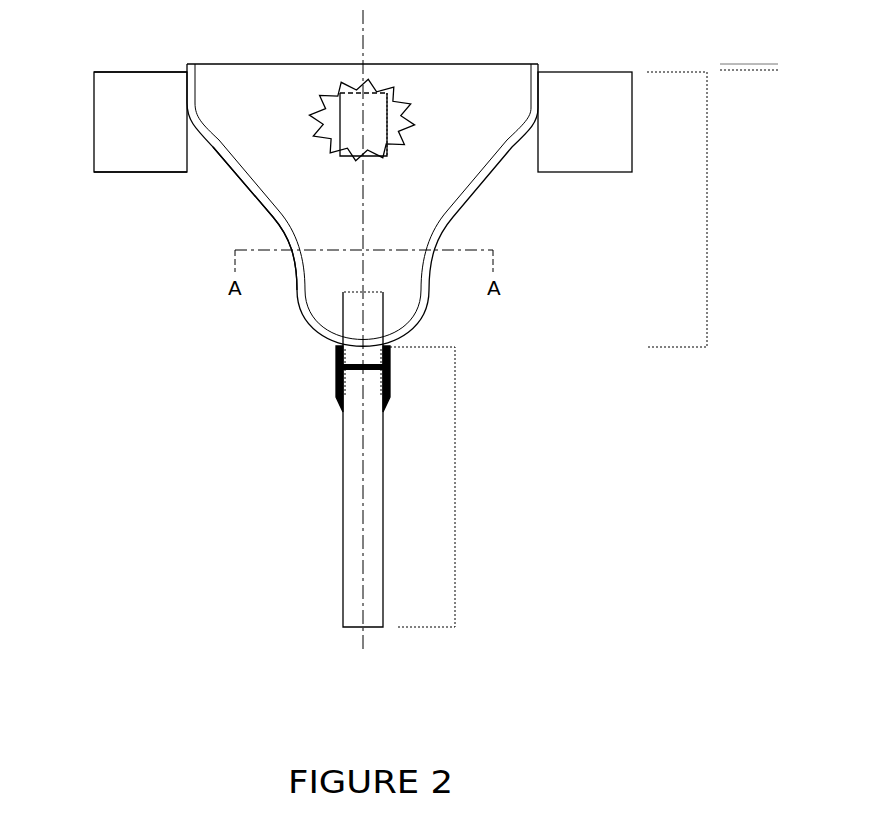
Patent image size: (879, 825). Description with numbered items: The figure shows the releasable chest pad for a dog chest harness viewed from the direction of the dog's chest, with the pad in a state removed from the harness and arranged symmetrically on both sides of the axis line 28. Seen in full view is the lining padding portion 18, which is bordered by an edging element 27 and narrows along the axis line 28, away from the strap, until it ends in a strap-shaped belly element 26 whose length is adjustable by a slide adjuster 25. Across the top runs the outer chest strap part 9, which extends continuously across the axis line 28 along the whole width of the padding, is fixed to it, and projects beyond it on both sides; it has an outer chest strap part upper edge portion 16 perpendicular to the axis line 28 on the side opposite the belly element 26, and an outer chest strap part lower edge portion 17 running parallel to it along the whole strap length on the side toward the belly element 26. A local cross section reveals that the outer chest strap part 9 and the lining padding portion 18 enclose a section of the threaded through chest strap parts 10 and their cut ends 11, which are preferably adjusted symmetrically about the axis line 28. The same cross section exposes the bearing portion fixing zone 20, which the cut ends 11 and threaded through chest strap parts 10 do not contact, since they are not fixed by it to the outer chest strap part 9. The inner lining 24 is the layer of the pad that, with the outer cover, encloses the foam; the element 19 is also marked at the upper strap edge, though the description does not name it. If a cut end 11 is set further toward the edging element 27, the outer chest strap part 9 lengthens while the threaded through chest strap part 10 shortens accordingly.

The outer chest strap part 9 is at (373, 112).
The threaded through chest strap parts 10 is at (125, 122).
The cut ends 11 is at (340, 137).
The outer chest strap part upper edge portion 16 is at (153, 72).
The outer chest strap part lower edge portion 17 is at (183, 172).
The lining padding portion 18 is at (699, 209).
The plate thickness 19 is at (778, 67).
The bearing portion fixing zone 20 is at (355, 95).
The inner lining 24 is at (387, 220).
The slide adjuster 25 is at (338, 400).
The belly element 26 is at (455, 487).
The edging element 27 is at (282, 222).
The axis line 28 is at (365, 40).